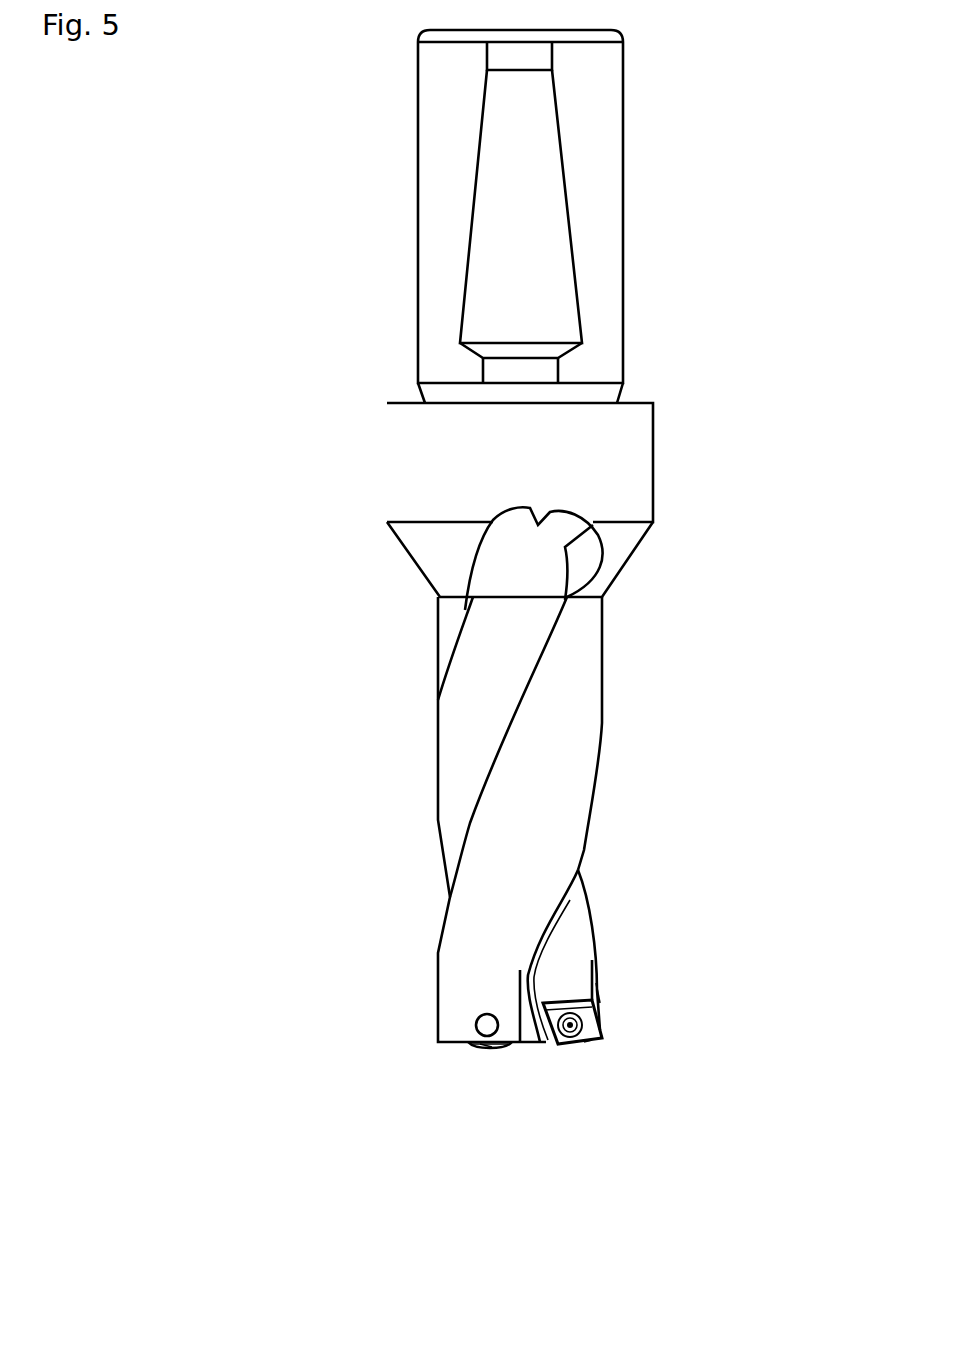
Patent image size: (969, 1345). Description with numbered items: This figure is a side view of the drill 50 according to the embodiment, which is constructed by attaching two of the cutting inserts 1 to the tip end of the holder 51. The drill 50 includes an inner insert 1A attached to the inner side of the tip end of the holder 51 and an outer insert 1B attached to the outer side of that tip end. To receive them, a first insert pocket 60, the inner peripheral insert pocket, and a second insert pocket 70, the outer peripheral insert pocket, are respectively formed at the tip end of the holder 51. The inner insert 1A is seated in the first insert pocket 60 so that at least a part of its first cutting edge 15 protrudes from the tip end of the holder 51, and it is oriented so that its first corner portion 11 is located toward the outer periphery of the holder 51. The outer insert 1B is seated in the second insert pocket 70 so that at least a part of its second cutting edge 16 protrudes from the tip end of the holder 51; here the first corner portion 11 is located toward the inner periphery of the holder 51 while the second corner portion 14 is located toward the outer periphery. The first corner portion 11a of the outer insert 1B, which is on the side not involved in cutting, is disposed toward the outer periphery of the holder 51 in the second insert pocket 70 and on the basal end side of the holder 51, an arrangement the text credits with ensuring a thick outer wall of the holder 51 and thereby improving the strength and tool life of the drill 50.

The insert 1 is at (535, 1123).
The inner insert 1A is at (500, 1050).
The outer insert 1B is at (582, 1050).
The first corner portion 11 is at (468, 1050).
The first corner portion 11a is at (597, 980).
The second corner portion 14 is at (520, 970).
The first cutting edge 15 is at (487, 1050).
The second cutting edge 16 is at (587, 1050).
The drill 50 is at (699, 238).
The holder 51 is at (630, 473).
The first insert pocket 60 is at (456, 1017).
The second insert pocket 70 is at (565, 988).